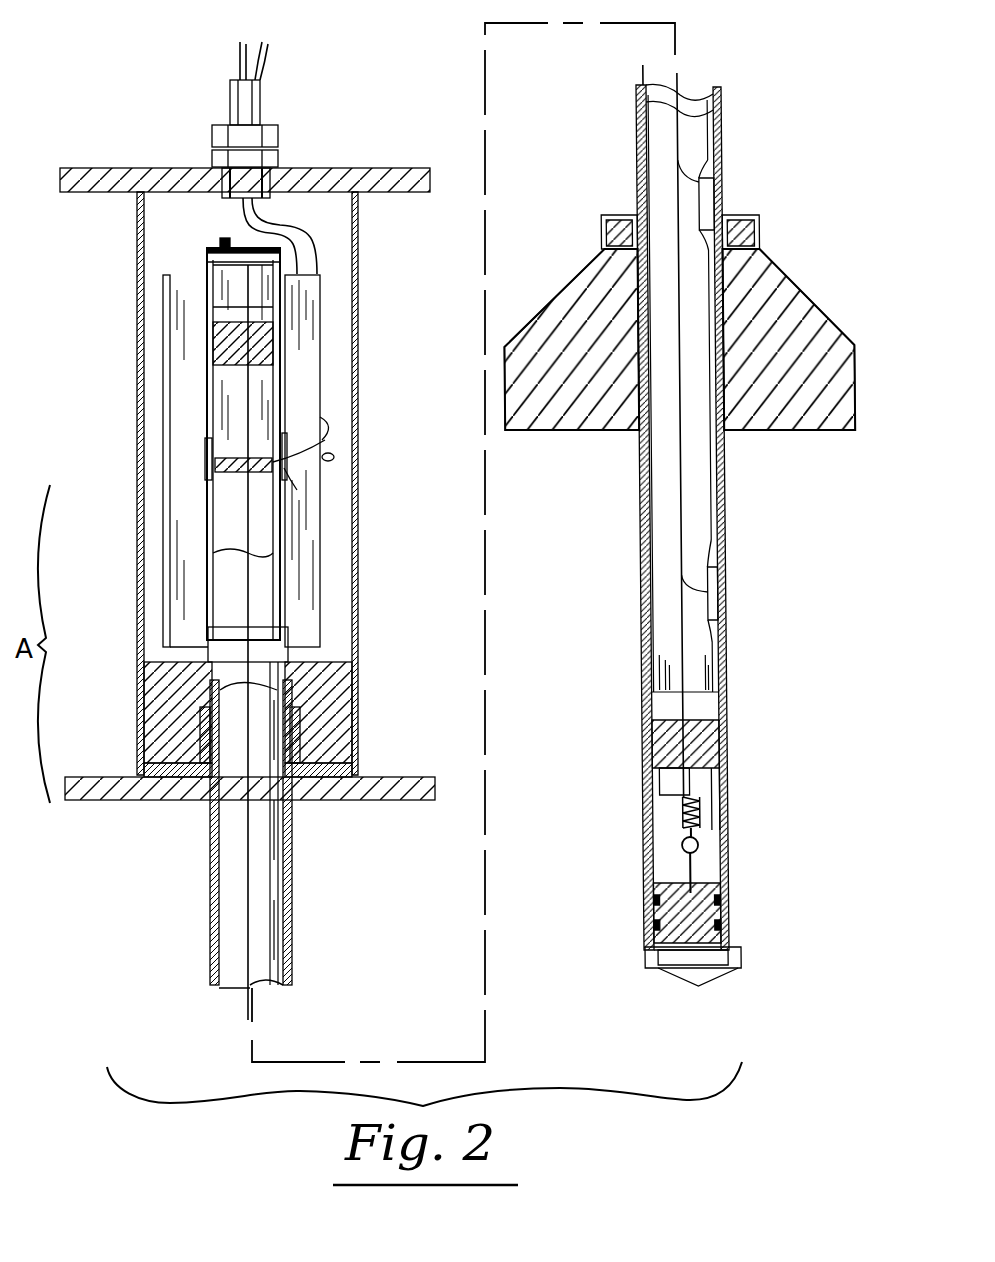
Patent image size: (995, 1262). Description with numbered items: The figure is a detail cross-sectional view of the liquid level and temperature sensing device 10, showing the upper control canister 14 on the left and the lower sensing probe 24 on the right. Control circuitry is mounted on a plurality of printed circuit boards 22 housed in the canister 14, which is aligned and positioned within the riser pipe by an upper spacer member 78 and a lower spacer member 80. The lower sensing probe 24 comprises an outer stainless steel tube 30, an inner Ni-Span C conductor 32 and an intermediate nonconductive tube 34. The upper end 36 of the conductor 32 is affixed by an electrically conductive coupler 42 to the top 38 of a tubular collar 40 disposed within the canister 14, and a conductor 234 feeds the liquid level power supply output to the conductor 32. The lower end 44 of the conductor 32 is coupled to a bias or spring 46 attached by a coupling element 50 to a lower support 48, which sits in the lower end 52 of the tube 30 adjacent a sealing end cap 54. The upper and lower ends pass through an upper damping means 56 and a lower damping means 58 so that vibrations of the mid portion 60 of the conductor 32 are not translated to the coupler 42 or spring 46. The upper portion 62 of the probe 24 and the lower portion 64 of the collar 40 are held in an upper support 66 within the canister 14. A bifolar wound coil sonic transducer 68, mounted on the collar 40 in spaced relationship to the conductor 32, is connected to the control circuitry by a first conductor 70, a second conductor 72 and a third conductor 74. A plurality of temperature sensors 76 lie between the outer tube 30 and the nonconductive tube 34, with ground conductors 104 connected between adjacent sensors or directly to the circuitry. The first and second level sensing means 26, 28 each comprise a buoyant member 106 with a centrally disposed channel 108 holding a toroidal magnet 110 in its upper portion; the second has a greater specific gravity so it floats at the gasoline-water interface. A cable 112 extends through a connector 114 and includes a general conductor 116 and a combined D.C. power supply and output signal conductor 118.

The liquid level and temperature sensing device 10 is at (138, 47).
The upper control canister 14 is at (140, 525).
The printed circuit board 22 is at (165, 385).
The lower sensing probe 24 is at (200, 900).
The first level sensing means 26 is at (681, 365).
The second level sensing means 28 is at (752, 447).
The outer stainless steel tube 30 is at (292, 923).
The inner Ni-Span C conductor 32 is at (285, 835).
The intermediate nonconductive tube 34 is at (667, 638).
The upper end 36 is at (240, 303).
The top 38 is at (208, 262).
The tubular collar 40 is at (210, 410).
The electrically conductive coupler 42 is at (222, 243).
The lower end 44 is at (692, 780).
The bias or spring 46 is at (700, 813).
The lower support 48 is at (710, 912).
The coupling element 50 is at (694, 870).
The lower end 52 is at (650, 915).
The sealing end cap 54 is at (740, 962).
The upper damping means 56 is at (213, 346).
The lower damping means 58 is at (722, 742).
The mid portion 60 is at (250, 815).
The upper portion 62 is at (205, 750).
The lower portion 64 is at (300, 690).
The upper support 66 is at (143, 668).
The bifolar wound coil sonic transducer 68 is at (208, 480).
The first conductor 70 is at (325, 425).
The second conductor 72 is at (290, 458).
The third conductor 74 is at (297, 492).
The temperature sensor 76 is at (718, 178).
The upper spacer member 78 is at (397, 168).
The lower spacer member 80 is at (400, 777).
The ground conductor 104 is at (677, 175).
The buoyant member 106 is at (804, 296).
The centrally disposed channel 108 is at (726, 280).
The toroidal magnet 110 is at (758, 218).
The cable 112 is at (286, 232).
The connector 114 is at (215, 135).
The general conductor 116 is at (264, 50).
The combined D.C. power supply and output signal conductor 118 is at (234, 58).
The conductor 234 is at (183, 262).